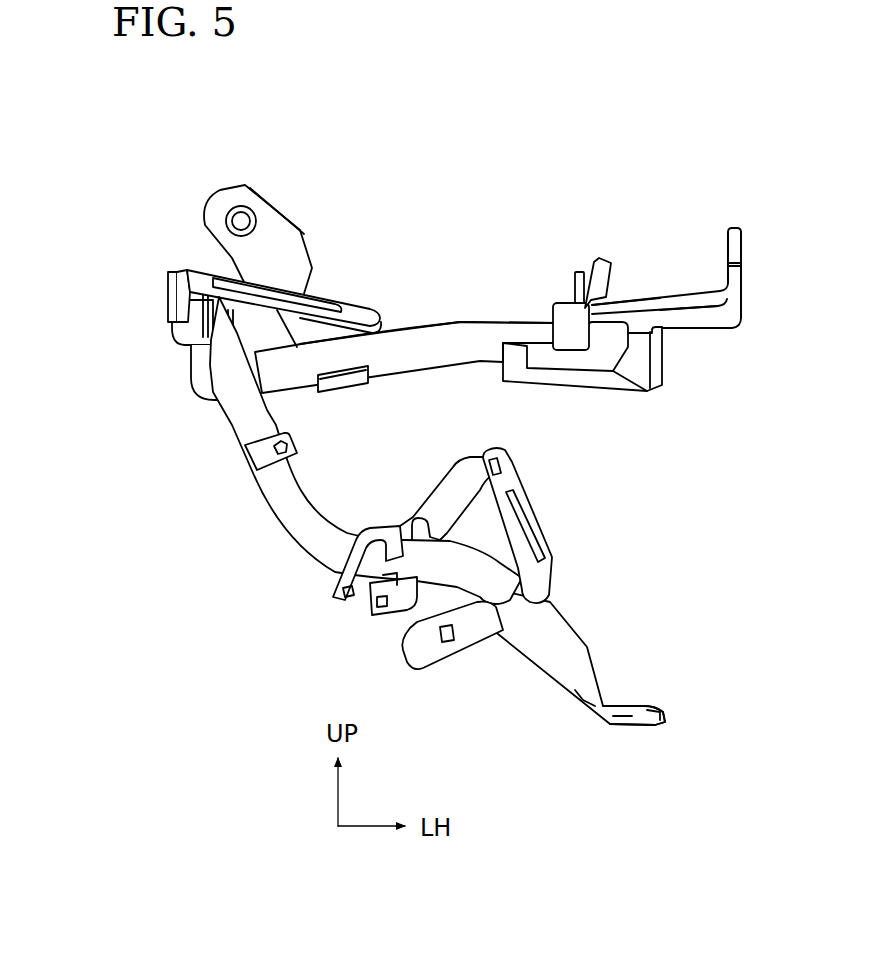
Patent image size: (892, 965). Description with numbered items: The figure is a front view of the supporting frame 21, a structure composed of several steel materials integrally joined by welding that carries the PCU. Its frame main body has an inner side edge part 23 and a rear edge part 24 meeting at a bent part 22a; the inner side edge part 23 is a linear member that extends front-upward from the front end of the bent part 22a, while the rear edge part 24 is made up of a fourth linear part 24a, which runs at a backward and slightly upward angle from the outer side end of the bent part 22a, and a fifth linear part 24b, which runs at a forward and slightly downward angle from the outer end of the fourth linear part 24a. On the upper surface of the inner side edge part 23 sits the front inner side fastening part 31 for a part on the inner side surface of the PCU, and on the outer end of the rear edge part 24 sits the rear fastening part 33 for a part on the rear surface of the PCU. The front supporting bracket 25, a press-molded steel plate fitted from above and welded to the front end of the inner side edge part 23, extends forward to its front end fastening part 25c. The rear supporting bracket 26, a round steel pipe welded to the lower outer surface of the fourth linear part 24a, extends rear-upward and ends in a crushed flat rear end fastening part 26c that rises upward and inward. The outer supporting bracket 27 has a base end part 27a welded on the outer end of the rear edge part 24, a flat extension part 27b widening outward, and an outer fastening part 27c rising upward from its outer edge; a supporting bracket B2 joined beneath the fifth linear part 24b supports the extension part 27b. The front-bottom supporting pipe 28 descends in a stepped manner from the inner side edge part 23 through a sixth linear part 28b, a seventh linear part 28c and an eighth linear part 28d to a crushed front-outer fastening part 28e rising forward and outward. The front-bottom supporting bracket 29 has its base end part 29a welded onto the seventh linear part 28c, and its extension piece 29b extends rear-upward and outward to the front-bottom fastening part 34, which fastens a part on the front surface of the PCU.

The supporting frame 21 is at (536, 143).
The bent part 22a is at (203, 380).
The inner side edge part 23 is at (169, 337).
The rear edge part 24 is at (460, 318).
The fourth linear part 24a is at (390, 345).
The fifth linear part 24b is at (513, 327).
The front supporting bracket 25 is at (296, 281).
The front end fastening part 25c is at (352, 309).
The rear supporting bracket 26 is at (290, 229).
The rear end fastening part 26c is at (233, 198).
The outer supporting bracket 27 is at (718, 338).
The base end part 27a is at (615, 306).
The extension part 27b is at (694, 303).
The outer fastening part 27c is at (741, 254).
The front-bottom supporting pipe 28 is at (296, 557).
The sixth linear part 28b is at (243, 436).
The seventh linear part 28c is at (420, 572).
The eighth linear part 28d is at (558, 627).
The front-outer fastening part 28e is at (637, 728).
The front-bottom supporting bracket 29 is at (426, 475).
The base end part 29a is at (390, 522).
The extension piece 29b is at (424, 497).
The front inner side fastening part 31 is at (175, 276).
The rear fastening part 33 is at (566, 302).
The front-bottom fastening part 34 is at (477, 462).
The supporting bracket B2 is at (612, 380).